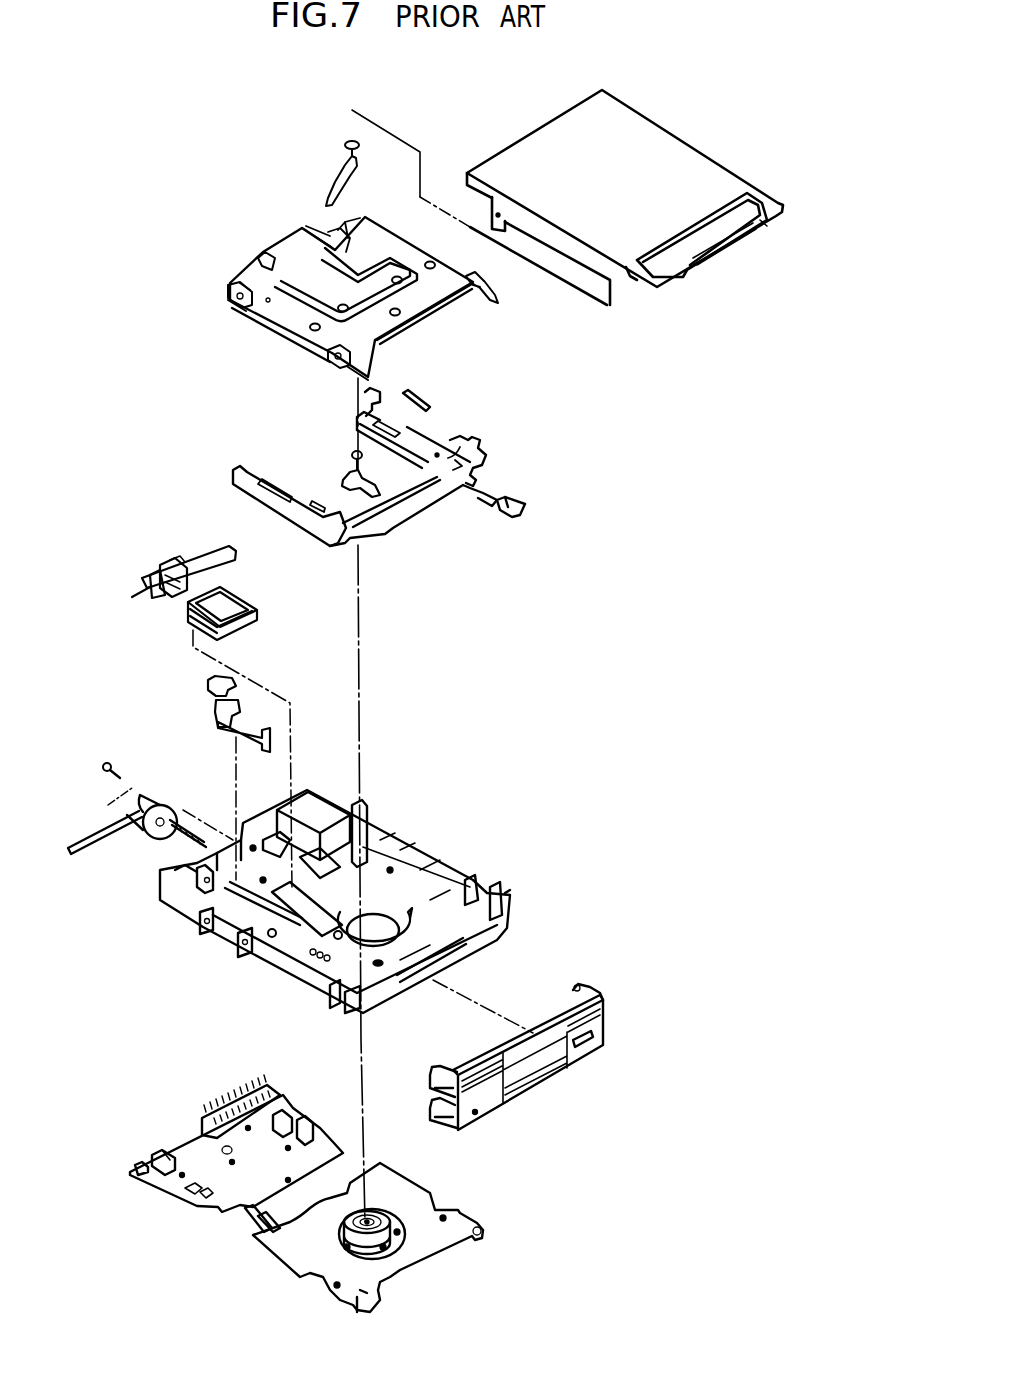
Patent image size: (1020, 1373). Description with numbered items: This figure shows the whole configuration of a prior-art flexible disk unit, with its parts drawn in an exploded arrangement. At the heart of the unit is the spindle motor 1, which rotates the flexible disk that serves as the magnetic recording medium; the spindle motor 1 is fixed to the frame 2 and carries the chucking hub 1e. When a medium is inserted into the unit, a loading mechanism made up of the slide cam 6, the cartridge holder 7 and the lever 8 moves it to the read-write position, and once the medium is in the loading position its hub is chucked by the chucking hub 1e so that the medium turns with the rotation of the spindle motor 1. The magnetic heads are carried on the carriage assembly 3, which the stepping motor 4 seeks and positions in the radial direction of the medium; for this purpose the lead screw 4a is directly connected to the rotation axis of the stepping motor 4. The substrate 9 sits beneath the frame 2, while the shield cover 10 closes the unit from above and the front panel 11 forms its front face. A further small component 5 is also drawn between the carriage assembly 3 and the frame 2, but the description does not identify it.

The spindle motor 1 is at (430, 1215).
The chucking hub 1e is at (377, 1217).
The frame 2 is at (502, 897).
The carriage assembly 3 is at (257, 610).
The stepping motor 4 is at (150, 803).
The lead screw 4a is at (170, 833).
The clip 5 is at (207, 703).
The slide cam 6 is at (470, 440).
The cartridge holder 7 is at (500, 292).
The lever 8 is at (335, 477).
The substrate 9 is at (147, 1178).
The shield cover 10 is at (705, 263).
The front panel 11 is at (603, 997).